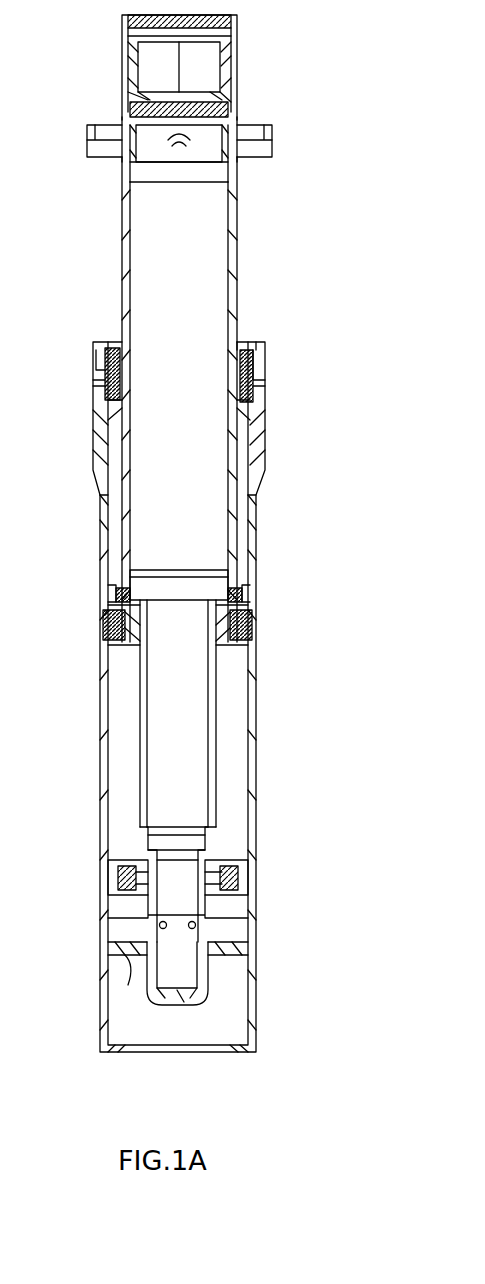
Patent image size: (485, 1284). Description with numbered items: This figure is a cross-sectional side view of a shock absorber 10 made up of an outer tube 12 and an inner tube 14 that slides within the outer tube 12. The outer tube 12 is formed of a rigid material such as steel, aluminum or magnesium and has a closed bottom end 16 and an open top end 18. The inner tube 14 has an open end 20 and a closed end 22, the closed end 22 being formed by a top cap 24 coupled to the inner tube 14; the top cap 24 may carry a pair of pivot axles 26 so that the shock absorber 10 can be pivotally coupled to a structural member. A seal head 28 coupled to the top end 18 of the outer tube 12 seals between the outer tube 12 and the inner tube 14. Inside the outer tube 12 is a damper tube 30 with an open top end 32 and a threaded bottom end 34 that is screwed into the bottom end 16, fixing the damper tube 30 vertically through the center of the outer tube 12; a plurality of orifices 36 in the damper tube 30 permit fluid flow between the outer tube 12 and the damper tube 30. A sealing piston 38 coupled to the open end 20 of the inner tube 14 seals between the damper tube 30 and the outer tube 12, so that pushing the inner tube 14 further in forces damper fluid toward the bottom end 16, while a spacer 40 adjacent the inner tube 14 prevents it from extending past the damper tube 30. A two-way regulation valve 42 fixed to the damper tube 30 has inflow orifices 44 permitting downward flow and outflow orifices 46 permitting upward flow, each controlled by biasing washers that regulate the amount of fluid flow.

The shock absorber 10 is at (271, 276).
The outer tube 12 is at (256, 768).
The inner tube 14 is at (122, 272).
The closed bottom end 16 is at (130, 958).
The open top end 18 is at (243, 342).
The open end 20 is at (226, 592).
The closed end 22 is at (234, 154).
The top cap 24 is at (237, 42).
The pivot axles 26 is at (122, 40).
The seal head 28 is at (103, 378).
The damper tube 30 is at (216, 705).
The open top end 32 is at (168, 598).
The threaded bottom end 34 is at (205, 965).
The orifices 36 is at (158, 925).
The sealing piston 38 is at (228, 640).
The spacer 40 is at (252, 446).
The two-way regulation valve 42 is at (243, 868).
The inflow orifices 44 is at (130, 872).
The outflow orifices 46 is at (226, 893).